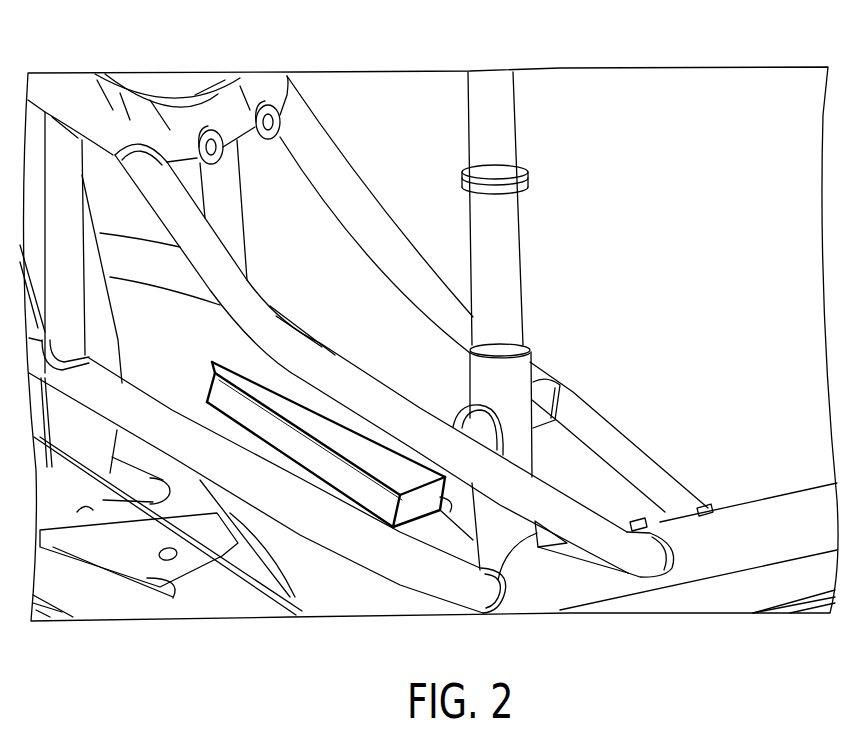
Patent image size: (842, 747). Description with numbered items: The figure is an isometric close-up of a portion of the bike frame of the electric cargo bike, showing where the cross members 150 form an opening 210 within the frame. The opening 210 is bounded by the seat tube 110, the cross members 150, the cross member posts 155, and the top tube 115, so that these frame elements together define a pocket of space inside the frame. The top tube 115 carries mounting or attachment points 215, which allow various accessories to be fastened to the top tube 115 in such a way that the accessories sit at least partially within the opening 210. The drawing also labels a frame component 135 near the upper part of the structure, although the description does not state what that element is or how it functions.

The seat tube 110 is at (529, 364).
The top tube 115 is at (800, 487).
The pivot bracket 135 is at (266, 88).
The cross members 150 is at (620, 428).
The cross member posts 155 is at (463, 422).
The opening 210 is at (648, 500).
The mounting or attachment points 215 is at (705, 510).